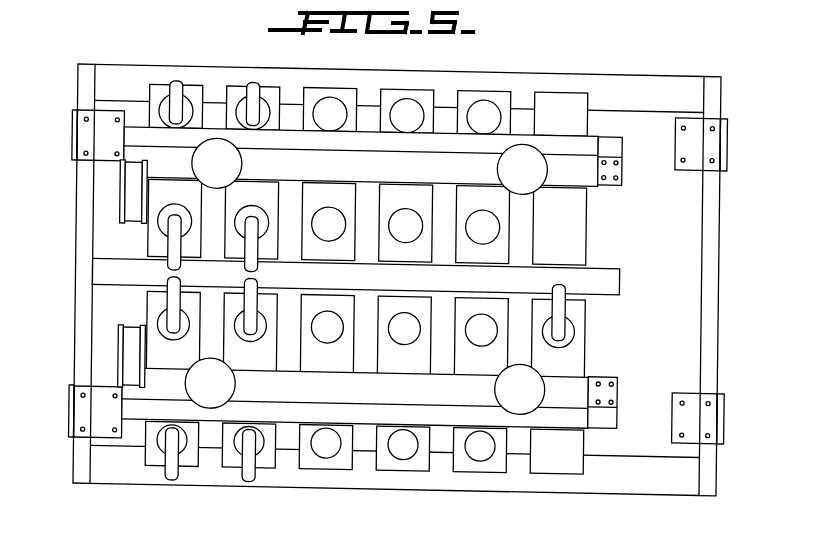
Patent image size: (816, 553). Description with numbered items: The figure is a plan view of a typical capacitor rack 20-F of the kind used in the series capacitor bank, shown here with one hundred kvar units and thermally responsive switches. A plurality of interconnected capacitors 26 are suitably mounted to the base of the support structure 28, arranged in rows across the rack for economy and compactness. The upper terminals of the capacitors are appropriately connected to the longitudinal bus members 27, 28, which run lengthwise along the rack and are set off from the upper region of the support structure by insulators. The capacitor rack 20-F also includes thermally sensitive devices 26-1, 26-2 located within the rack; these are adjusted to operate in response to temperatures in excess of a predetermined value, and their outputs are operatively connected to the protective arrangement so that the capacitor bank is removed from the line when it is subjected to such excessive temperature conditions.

The capacitor rack 20-F is at (664, 66).
The capacitors 26 is at (227, 470).
The thermally sensitive device 26-1 is at (120, 345).
The thermally sensitive device 26-2 is at (120, 185).
The longitudinal bus member 27 is at (622, 280).
The longitudinal bus member 28 is at (624, 175).